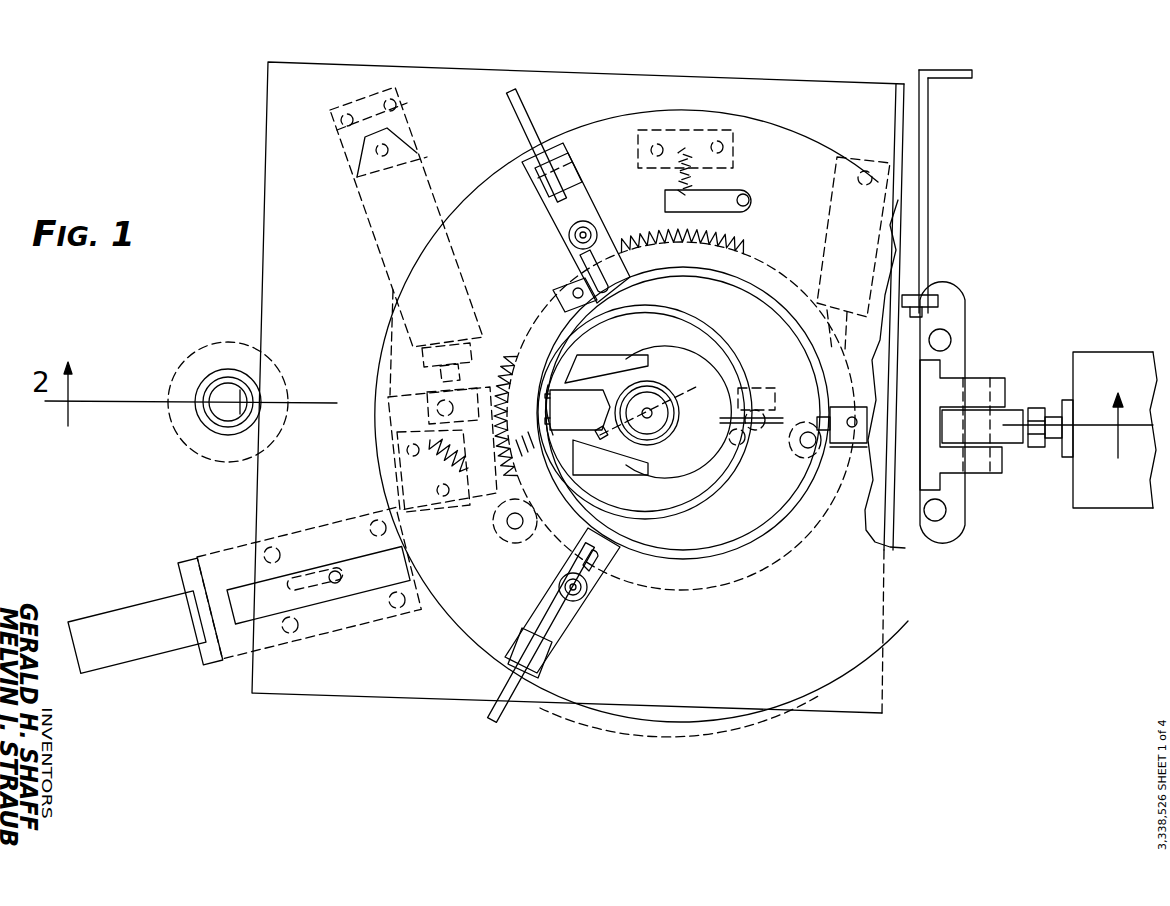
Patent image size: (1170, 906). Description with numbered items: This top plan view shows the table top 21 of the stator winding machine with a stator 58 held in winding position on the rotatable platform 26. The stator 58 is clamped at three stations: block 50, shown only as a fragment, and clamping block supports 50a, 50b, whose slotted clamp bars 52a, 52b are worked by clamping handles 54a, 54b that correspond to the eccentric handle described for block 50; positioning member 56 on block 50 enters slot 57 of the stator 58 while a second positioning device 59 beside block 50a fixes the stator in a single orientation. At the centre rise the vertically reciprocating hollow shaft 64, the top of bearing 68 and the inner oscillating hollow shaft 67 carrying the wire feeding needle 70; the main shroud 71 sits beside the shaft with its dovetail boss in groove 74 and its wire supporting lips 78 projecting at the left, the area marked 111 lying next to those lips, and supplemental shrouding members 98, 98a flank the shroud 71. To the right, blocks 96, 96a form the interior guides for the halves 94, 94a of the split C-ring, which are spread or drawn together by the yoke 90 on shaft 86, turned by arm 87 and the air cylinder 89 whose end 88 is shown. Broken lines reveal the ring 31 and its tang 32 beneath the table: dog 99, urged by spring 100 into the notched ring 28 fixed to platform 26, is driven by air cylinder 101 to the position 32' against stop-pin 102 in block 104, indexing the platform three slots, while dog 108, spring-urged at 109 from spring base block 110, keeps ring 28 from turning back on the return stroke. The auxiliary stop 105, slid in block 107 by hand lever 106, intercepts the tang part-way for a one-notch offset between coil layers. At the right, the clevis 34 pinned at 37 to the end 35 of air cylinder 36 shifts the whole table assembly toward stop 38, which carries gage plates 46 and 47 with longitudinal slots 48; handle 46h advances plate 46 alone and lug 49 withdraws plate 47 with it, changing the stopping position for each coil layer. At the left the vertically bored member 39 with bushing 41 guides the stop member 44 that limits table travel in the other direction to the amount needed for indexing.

The table top 21 is at (268, 188).
The platform 26 is at (492, 188).
The notched ring 28 is at (745, 228).
The ring member 31 is at (723, 575).
The tang 32 is at (416, 400).
The tang indexed position 32' is at (424, 632).
The clevis member 34 is at (1004, 468).
The air cylinder end 35 is at (1015, 410).
The air cylinder 36 is at (1118, 504).
The pin 37 is at (984, 470).
The stop 38 is at (965, 512).
The vertically bored member 39 is at (200, 456).
The bushing 41 is at (218, 407).
The stop member 44 is at (228, 385).
The gage plate member 46 is at (929, 120).
The handle 46h is at (972, 72).
The gage plate member 47 is at (918, 107).
The slots 48 is at (927, 158).
The lug 49 is at (915, 318).
The block member 50 is at (854, 450).
The clamping block support 50a is at (570, 164).
The clamping block support 50b is at (548, 670).
The clamp bar 52a is at (560, 215).
The clamp bar 52b is at (606, 578).
The rod 54a is at (522, 112).
The rod 54b is at (493, 723).
The positioning member 56 is at (848, 420).
The slot 57 is at (818, 416).
The stator 58 is at (672, 290).
The positioning device 59 is at (560, 300).
The hollow shaft 64 is at (678, 430).
The hollow shaft 67 is at (672, 416).
The bearing 68 is at (668, 400).
The wire feeding needle 70 is at (600, 428).
The shroud member 71 is at (562, 438).
The dovetail slot 74 is at (632, 392).
The wire supporting lips 78 is at (548, 394).
The shaft 86 is at (748, 386).
The arm 87 is at (795, 462).
The air cylinder end 88 is at (828, 462).
The air cylinder 89 is at (835, 216).
The yoke means 90 is at (768, 440).
The split C-ring half 94 is at (760, 338).
The split C-ring half 94a is at (688, 520).
The block member 96 is at (700, 352).
The block member 96a is at (672, 486).
The supplemental shrouding member 98 is at (588, 352).
The supplemental shrouding member 98a is at (583, 470).
The dog member 99 is at (424, 393).
The spring 100 is at (486, 460).
The air cylinder 101 is at (378, 238).
The stop-pin 102 is at (470, 645).
The block 104 is at (492, 652).
The auxiliary stop 105 is at (344, 618).
The hand lever 106 is at (134, 656).
The block member 107 is at (236, 672).
The dog member 108 is at (735, 186).
The spring 109 is at (672, 178).
The spring base block 110 is at (640, 152).
The hatching 111 is at (524, 449).